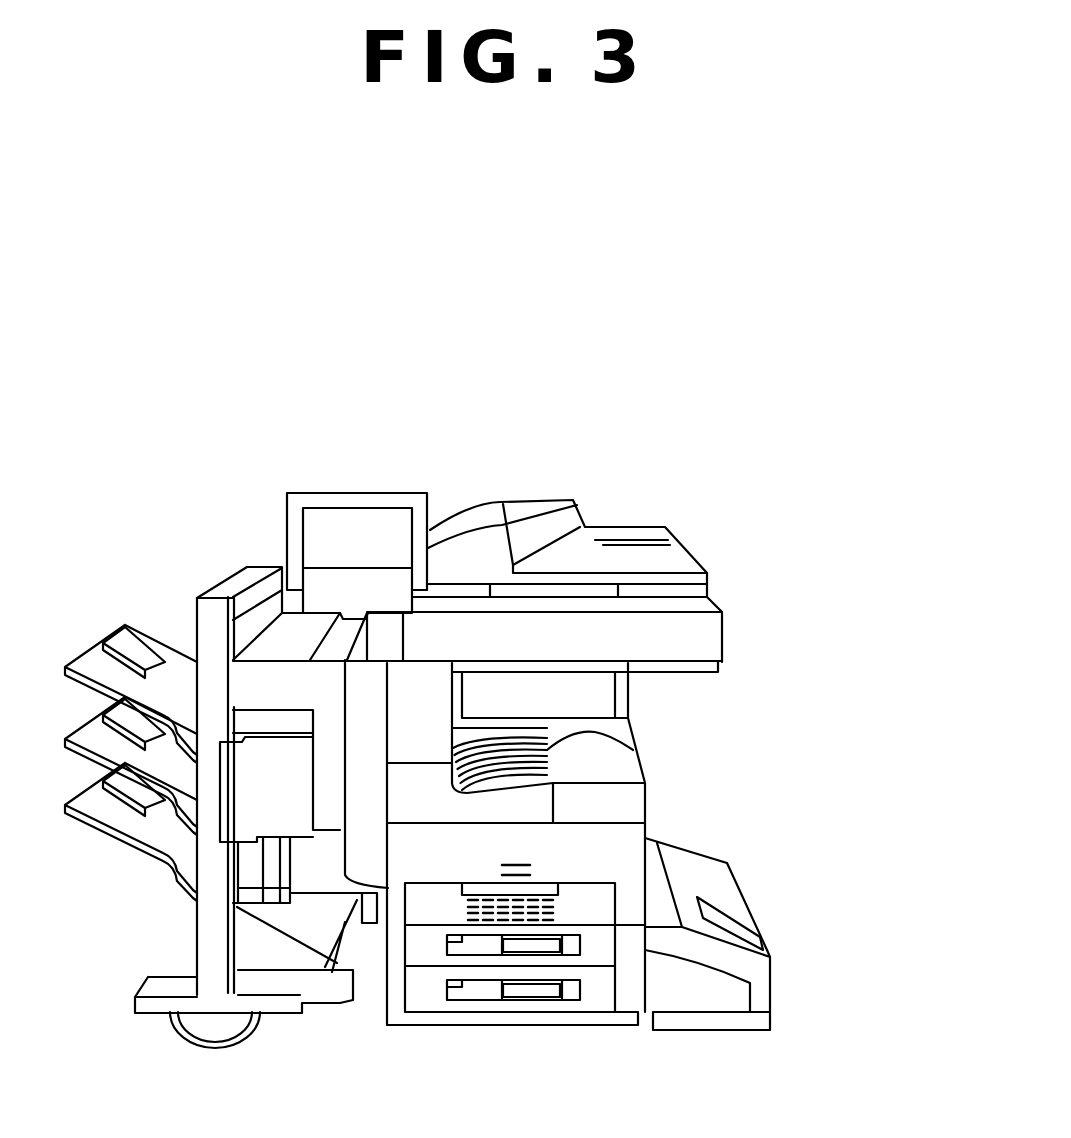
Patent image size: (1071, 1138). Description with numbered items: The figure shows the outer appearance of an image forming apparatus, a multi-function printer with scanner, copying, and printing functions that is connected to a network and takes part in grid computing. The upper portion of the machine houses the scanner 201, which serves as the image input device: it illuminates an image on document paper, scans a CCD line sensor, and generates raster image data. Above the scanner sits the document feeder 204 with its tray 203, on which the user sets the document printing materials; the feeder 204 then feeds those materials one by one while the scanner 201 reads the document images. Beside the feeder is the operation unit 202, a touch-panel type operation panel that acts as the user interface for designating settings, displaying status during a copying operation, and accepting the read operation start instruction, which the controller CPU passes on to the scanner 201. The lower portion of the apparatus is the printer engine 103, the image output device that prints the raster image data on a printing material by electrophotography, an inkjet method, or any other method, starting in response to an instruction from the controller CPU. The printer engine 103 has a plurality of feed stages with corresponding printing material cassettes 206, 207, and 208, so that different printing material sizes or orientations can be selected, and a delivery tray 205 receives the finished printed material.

The printer engine 103 is at (843, 662).
The scanner 201 is at (627, 730).
The operation unit 202 is at (428, 408).
The tray 203 is at (524, 508).
The document feeder 204 is at (633, 533).
The delivery tray 205 is at (633, 750).
The printing material cassette 206 is at (480, 948).
The printing material cassette 207 is at (595, 998).
The printing material cassette 208 is at (717, 1002).